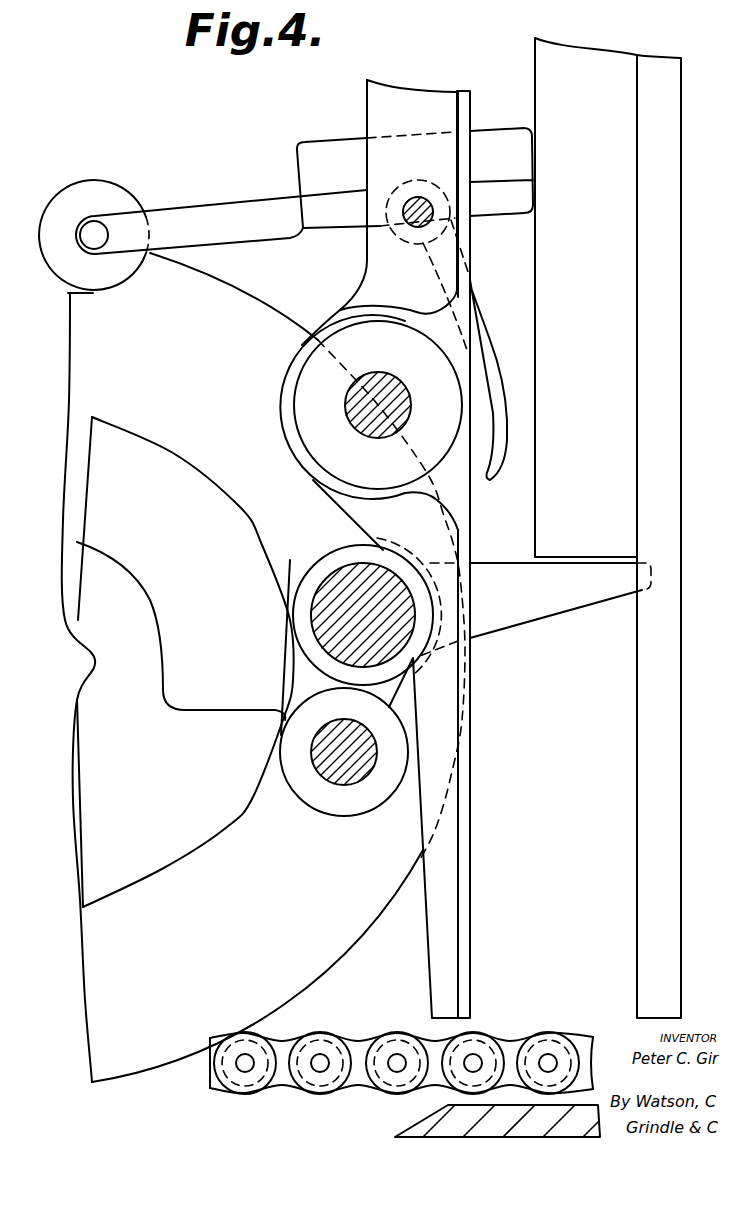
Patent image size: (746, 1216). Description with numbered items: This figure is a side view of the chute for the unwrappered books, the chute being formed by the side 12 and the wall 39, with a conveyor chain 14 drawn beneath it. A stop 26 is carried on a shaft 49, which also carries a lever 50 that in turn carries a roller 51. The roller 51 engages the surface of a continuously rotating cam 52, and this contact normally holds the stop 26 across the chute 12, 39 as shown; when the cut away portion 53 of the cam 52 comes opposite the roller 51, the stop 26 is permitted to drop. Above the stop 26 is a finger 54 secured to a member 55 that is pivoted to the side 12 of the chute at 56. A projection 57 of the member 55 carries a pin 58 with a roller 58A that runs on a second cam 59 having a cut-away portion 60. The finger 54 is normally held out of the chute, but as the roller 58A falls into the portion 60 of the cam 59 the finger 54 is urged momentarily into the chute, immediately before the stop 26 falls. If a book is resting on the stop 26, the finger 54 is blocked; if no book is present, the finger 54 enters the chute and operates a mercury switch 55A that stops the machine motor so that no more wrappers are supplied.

The side of the chute 12 is at (460, 97).
The conveyor chain 14 is at (327, 1012).
The stop 26 is at (603, 588).
The chute 39 is at (636, 410).
The shaft 49 is at (340, 583).
The lever 50 is at (393, 693).
The roller 51 is at (363, 797).
The cam 52 is at (187, 842).
The cut away portion 53 is at (150, 453).
The finger 54 is at (483, 347).
The member 55 is at (325, 212).
The mercury switch 55A is at (312, 152).
The pivot 56 is at (407, 223).
The projection 57 is at (253, 210).
The pin 58 is at (105, 238).
The roller 58A is at (98, 195).
The cam 59 is at (160, 1082).
The cut-away portion 60 is at (120, 290).